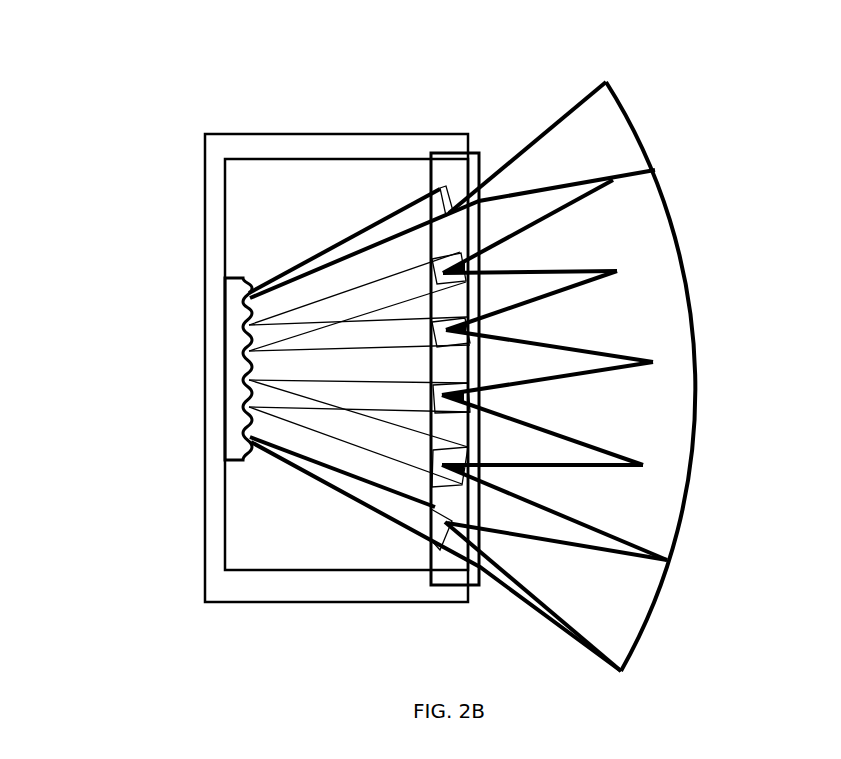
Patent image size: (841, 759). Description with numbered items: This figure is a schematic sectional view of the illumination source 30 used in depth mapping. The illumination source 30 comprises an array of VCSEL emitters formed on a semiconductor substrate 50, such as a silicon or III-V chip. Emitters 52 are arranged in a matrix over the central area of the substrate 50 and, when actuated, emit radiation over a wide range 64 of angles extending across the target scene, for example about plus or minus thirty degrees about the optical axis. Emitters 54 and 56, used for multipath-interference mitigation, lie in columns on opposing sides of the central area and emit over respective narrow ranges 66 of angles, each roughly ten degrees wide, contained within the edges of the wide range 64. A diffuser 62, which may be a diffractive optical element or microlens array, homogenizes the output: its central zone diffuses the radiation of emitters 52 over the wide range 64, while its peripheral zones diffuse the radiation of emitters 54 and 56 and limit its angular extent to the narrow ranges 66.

The illumination source 30 is at (104, 124).
The semiconductor substrate 50 is at (262, 405).
The emitters 52 is at (233, 360).
The emitters 54 is at (344, 554).
The emitters 56 is at (352, 272).
The diffuser 62 is at (478, 152).
The wide range 64 is at (658, 302).
The narrow ranges 66 is at (608, 132).